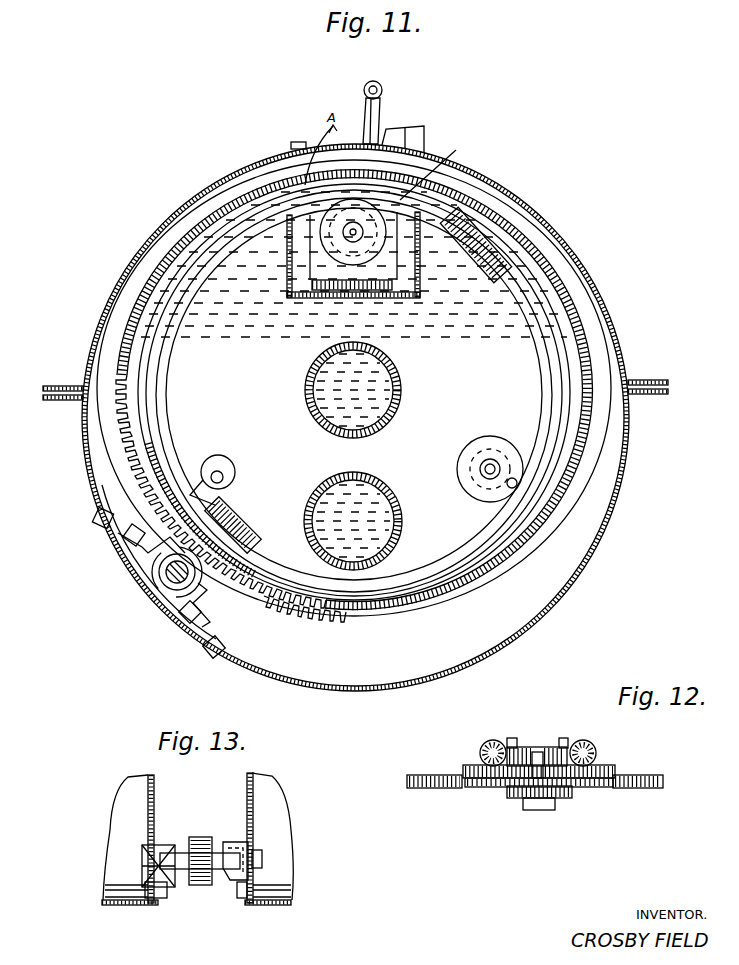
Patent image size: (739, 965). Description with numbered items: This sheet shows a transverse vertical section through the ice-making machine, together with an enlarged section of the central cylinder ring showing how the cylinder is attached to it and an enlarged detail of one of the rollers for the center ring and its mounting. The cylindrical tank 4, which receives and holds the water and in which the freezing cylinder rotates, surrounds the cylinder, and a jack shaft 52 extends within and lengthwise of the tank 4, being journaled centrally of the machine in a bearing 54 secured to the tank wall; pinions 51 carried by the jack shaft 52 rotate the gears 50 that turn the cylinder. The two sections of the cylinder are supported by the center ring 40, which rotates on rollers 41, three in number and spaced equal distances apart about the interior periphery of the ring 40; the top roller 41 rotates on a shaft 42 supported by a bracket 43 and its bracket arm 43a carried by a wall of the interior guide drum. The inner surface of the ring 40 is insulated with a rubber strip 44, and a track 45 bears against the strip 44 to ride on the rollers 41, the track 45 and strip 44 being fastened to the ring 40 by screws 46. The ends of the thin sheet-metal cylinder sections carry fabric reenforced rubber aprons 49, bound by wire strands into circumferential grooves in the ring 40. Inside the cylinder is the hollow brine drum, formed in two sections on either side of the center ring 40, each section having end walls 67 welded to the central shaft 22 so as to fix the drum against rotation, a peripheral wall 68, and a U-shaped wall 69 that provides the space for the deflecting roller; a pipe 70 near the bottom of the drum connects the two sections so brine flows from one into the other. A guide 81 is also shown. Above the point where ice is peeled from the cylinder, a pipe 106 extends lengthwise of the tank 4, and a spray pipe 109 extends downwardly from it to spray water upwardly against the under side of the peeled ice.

In FIG. 11, the cylindrical tank 4 is at (616, 331).
In FIG. 11, the central shaft 22 is at (401, 397).
In FIG. 11, the center ring 40 is at (311, 606).
In FIG. 12, the center ring 40 is at (470, 765).
In FIG. 11, the rollers 41 is at (336, 266).
In FIG. 13, the rollers 41 is at (198, 838).
In FIG. 11, the shaft 42 is at (350, 233).
In FIG. 13, the shaft 42 is at (220, 852).
In FIG. 11, the bracket 43 is at (398, 262).
In FIG. 11, the bracket arm 43a is at (230, 462).
In FIG. 13, the bracket arm 43a is at (238, 842).
In FIG. 11, the rubber strip 44 is at (293, 598).
In FIG. 12, the rubber strip 44 is at (600, 765).
In FIG. 11, the track 45 is at (210, 490).
In FIG. 12, the track 45 is at (551, 748).
In FIG. 12, the screws 46 is at (538, 752).
In FIG. 11, the fabric reenforced rubber aprons 49 is at (350, 614).
In FIG. 12, the fabric reenforced rubber aprons 49 is at (421, 775).
In FIG. 11, the gears 50 is at (590, 292).
In FIG. 12, the gears 50 is at (523, 804).
In FIG. 11, the pinions 51 is at (172, 585).
In FIG. 11, the jack shaft 52 is at (165, 574).
In FIG. 11, the bearing 54 is at (118, 537).
In FIG. 11, the end walls 67 is at (176, 413).
In FIG. 13, the end walls 67 is at (247, 778).
In FIG. 13, the peripheral wall 68 is at (140, 905).
In FIG. 11, the U-shaped wall 69 is at (290, 298).
In FIG. 11, the pipe 70 is at (398, 509).
In FIG. 11, the guide 81 is at (434, 166).
In FIG. 11, the pipe 106 is at (383, 91).
In FIG. 11, the spray pipe 109 is at (379, 117).